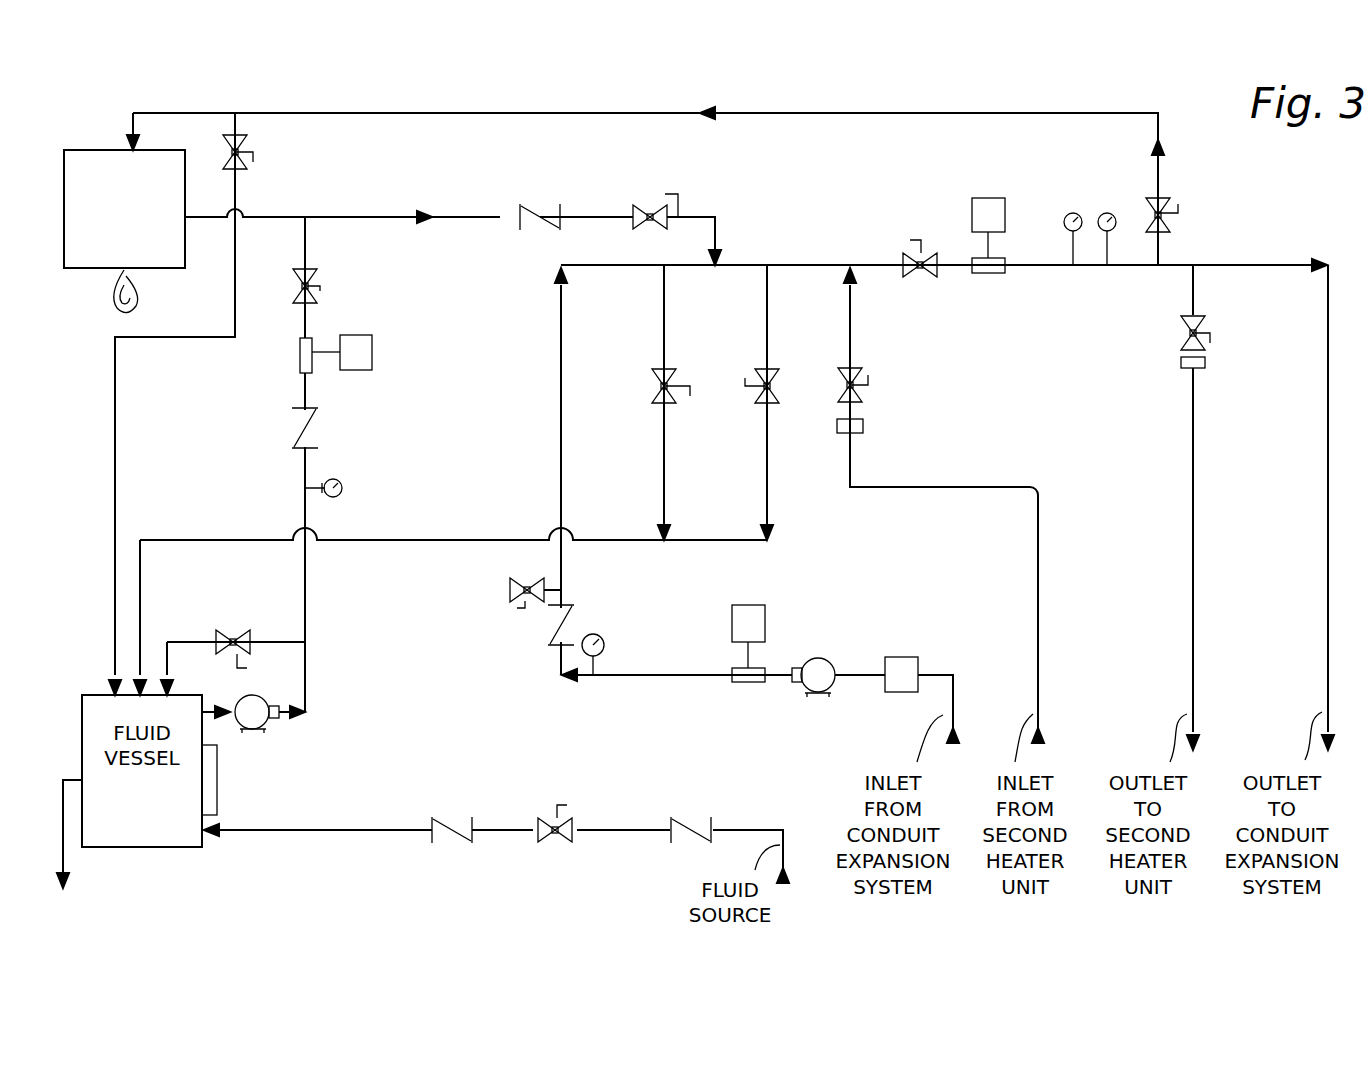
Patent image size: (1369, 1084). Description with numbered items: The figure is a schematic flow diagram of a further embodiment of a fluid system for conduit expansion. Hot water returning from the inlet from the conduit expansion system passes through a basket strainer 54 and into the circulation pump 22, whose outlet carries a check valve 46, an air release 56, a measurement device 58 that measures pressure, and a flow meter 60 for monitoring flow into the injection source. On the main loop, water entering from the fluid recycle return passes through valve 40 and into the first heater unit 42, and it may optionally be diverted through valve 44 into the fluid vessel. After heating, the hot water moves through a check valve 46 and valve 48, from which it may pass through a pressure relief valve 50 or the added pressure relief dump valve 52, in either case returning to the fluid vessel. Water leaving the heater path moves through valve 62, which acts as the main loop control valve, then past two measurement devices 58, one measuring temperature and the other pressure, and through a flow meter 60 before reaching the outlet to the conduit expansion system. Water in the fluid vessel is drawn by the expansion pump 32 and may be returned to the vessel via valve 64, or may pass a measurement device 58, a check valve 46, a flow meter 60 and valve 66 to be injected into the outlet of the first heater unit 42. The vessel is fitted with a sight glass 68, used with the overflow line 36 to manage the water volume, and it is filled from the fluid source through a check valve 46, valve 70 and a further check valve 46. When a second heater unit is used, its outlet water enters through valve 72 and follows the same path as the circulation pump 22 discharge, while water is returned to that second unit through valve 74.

The circulation pump 22 is at (808, 694).
The expansion pump 32 is at (262, 733).
The overflow line 36 is at (72, 856).
The valve 40 is at (1178, 228).
The first heater unit 42 is at (160, 268).
The valve 44 is at (255, 168).
The check valve 46 is at (552, 262).
The valve 48 is at (698, 210).
The pressure relief valve 50 is at (652, 403).
The pressure relief dump valve 52 is at (757, 403).
The basket strainer 54 is at (918, 663).
The air release 56 is at (510, 590).
The measurement device 58 is at (338, 497).
The flow meter 60 is at (372, 357).
The valve 62 is at (935, 276).
The valve 64 is at (250, 630).
The valve 66 is at (318, 276).
The sight glass 68 is at (217, 790).
The valve 70 is at (540, 845).
The valve 72 is at (862, 398).
The valve 74 is at (1183, 350).